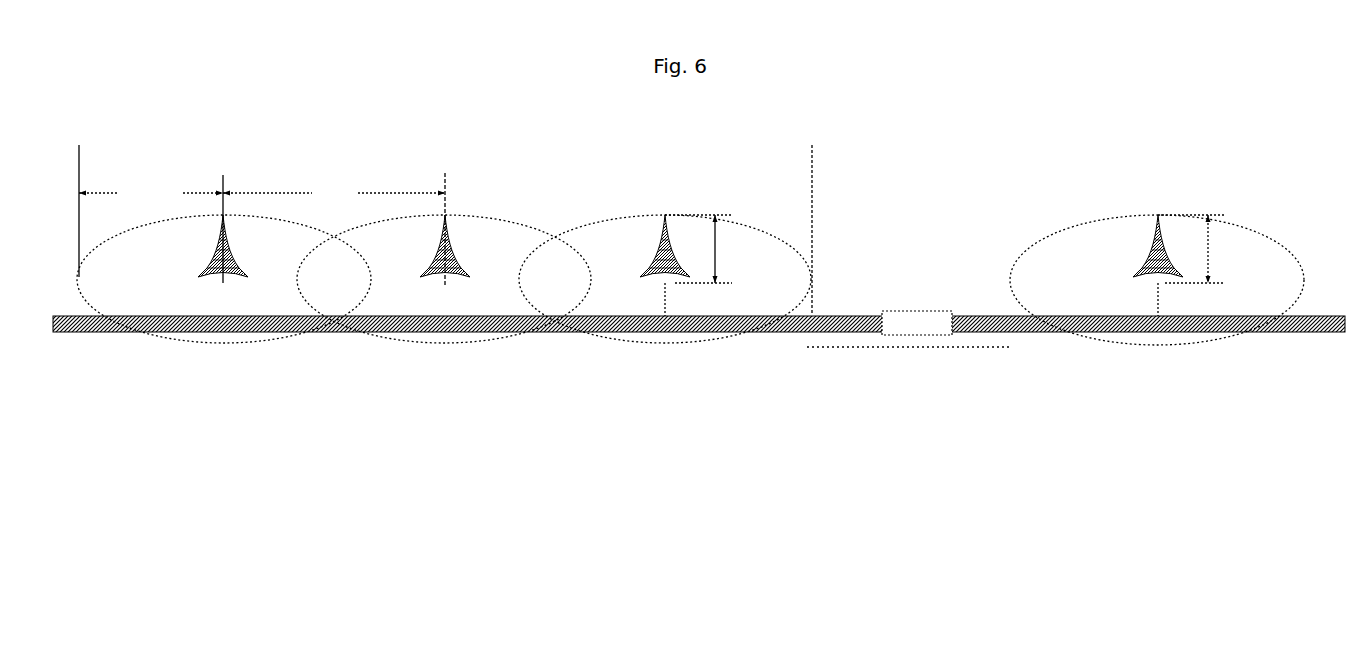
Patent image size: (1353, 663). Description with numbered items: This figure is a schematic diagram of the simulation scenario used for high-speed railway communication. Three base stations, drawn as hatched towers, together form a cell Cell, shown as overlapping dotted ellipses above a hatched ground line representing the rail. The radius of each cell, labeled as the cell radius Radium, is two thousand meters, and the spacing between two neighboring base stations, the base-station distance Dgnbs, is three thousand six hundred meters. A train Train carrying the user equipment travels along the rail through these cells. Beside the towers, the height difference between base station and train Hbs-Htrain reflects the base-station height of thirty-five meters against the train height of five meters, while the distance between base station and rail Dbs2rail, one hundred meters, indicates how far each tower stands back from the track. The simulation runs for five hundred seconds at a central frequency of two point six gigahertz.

The cell Cell is at (812, 162).
The cell radius Radium is at (151, 193).
The distance between two base stations Dgnbs is at (334, 194).
The train Train is at (909, 329).
The height difference between base station and train Hbs-Htrain is at (945, 249).
The distance between base station and rail Dbs2rail is at (931, 299).